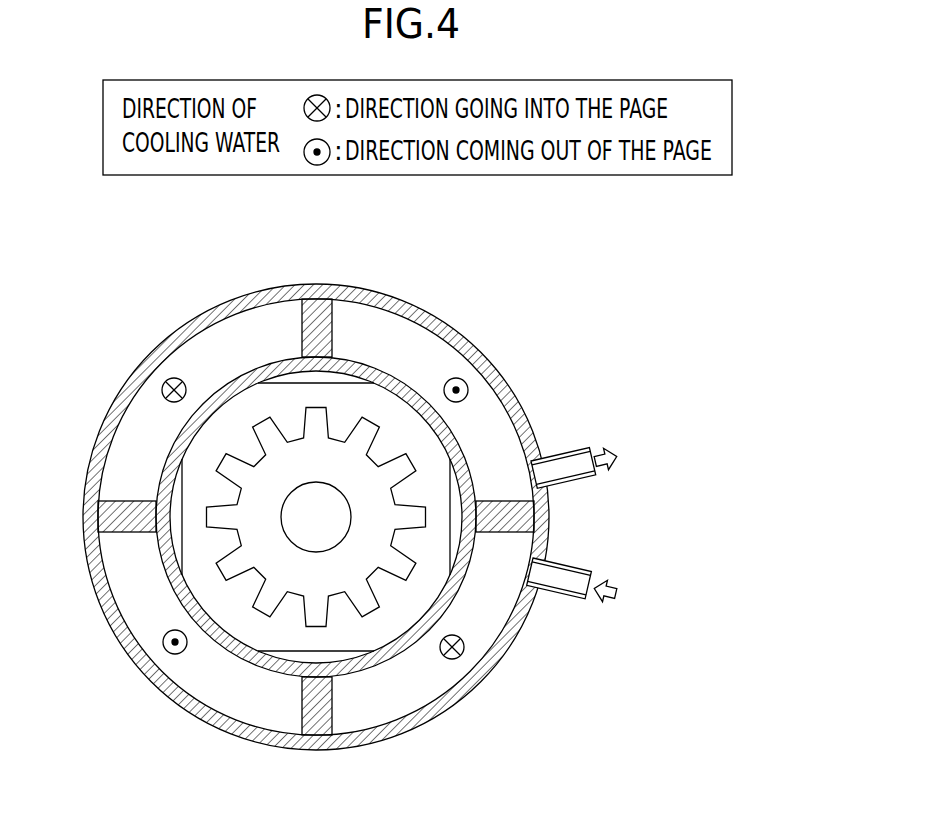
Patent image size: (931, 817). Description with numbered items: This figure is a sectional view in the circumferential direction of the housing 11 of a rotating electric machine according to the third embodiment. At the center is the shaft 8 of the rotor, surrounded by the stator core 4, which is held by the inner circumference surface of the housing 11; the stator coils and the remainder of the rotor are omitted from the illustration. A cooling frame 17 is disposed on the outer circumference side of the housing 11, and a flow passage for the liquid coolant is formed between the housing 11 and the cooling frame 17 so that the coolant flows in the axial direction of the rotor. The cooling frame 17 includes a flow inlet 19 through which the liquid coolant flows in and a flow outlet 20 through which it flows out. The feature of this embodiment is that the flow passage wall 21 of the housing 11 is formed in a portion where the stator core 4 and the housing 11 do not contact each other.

The stator core 4 is at (272, 398).
The shaft 8 is at (323, 522).
The housing 11 is at (360, 360).
The cooling frame 17 is at (473, 338).
The flow inlet 19 is at (558, 580).
The flow outlet 20 is at (563, 470).
The flow passage wall 21 is at (333, 710).